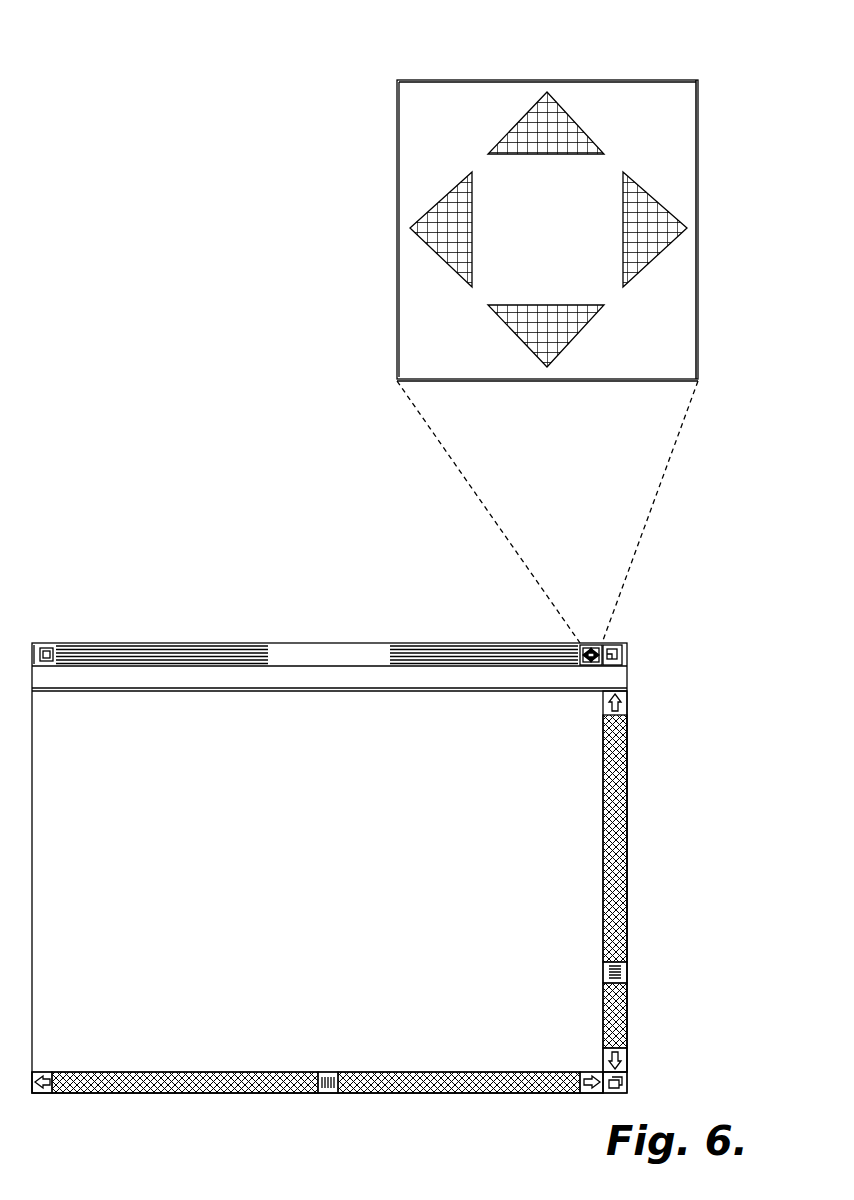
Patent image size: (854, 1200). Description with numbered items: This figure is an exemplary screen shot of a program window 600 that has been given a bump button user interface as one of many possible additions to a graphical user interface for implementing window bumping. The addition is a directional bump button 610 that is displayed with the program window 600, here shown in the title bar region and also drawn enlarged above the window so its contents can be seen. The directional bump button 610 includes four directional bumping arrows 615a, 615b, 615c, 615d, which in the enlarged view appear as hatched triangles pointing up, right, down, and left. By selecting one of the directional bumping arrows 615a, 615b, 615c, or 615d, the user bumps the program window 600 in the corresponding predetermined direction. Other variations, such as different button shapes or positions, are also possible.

The program window 600 is at (627, 851).
The directional bump button 610 is at (698, 80).
The directional bumping arrow 615a is at (547, 92).
The directional bumping arrow 615b is at (687, 228).
The directional bumping arrow 615c is at (547, 367).
The directional bumping arrow 615d is at (410, 228).